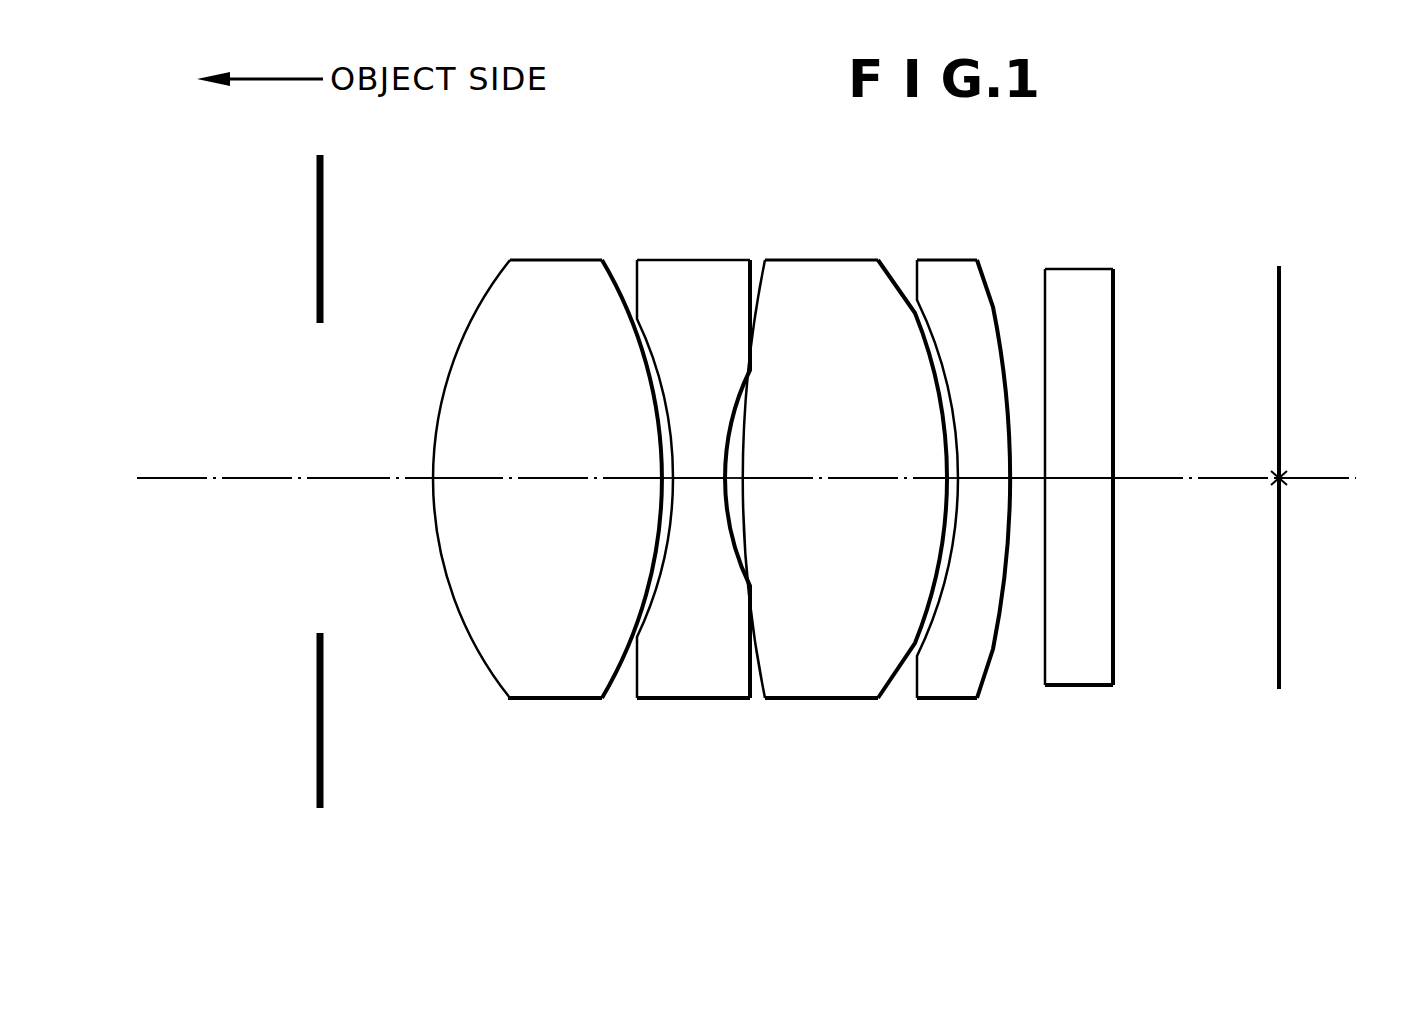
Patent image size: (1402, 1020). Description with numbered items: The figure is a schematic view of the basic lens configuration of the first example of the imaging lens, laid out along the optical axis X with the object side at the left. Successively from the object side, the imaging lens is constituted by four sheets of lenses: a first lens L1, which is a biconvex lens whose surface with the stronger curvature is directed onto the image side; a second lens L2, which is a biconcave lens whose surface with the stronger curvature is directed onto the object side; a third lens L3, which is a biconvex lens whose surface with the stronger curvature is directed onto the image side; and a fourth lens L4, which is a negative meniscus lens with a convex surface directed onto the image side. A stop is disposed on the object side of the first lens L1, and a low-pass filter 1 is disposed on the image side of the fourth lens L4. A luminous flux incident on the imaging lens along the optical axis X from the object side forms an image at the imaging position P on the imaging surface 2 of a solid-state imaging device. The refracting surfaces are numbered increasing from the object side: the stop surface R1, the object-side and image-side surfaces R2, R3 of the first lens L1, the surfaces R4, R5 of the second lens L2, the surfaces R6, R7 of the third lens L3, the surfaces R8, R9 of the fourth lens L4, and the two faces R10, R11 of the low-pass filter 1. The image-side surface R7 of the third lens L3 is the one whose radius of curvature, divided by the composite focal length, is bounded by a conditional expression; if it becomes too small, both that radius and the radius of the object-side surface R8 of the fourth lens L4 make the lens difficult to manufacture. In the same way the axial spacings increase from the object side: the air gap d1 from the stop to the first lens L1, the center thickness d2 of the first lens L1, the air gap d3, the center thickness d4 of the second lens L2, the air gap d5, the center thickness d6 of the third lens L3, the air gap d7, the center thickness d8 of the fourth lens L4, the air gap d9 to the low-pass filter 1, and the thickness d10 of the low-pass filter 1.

The stop surface R1 is at (321, 221).
The object-side surface of first lens R2 is at (490, 300).
The image-side surface of first lens R3 is at (612, 292).
The object-side surface of second lens R4 is at (656, 385).
The image-side surface of second lens R5 is at (738, 388).
The object-side surface of third lens R6 is at (751, 392).
The image-side surface of third lens R7 is at (893, 278).
The object-side surface of fourth lens R8 is at (931, 358).
The image-side surface of fourth lens R9 is at (990, 300).
The object-side surface of low-pass filter R10 is at (1045, 296).
The image-side surface of low-pass filter R11 is at (1116, 303).
The air gap between stop and first lens d1 is at (357, 478).
The center thickness of first lens d2 is at (497, 478).
The air gap between first and second lenses d3 is at (662, 474).
The center thickness of second lens d4 is at (698, 478).
The air gap between second and third lenses d5 is at (734, 477).
The center thickness of third lens d6 is at (800, 478).
The air gap between third and fourth lenses d7 is at (947, 470).
The center thickness of fourth lens d8 is at (993, 478).
The air gap between fourth lens and low-pass filter d9 is at (1030, 478).
The center thickness of low-pass filter d10 is at (1085, 478).
The first lens L1 is at (547, 482).
The second lens L2 is at (689, 487).
The third lens L3 is at (845, 483).
The fourth lens L4 is at (965, 482).
The low-pass filter 1 is at (1112, 472).
The imaging surface 2 is at (1277, 350).
The imaging position P is at (1290, 484).
The optical axis X is at (215, 482).